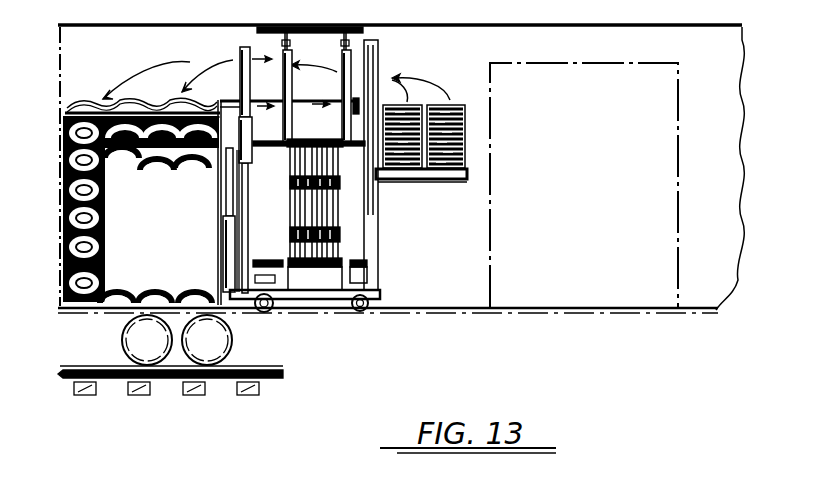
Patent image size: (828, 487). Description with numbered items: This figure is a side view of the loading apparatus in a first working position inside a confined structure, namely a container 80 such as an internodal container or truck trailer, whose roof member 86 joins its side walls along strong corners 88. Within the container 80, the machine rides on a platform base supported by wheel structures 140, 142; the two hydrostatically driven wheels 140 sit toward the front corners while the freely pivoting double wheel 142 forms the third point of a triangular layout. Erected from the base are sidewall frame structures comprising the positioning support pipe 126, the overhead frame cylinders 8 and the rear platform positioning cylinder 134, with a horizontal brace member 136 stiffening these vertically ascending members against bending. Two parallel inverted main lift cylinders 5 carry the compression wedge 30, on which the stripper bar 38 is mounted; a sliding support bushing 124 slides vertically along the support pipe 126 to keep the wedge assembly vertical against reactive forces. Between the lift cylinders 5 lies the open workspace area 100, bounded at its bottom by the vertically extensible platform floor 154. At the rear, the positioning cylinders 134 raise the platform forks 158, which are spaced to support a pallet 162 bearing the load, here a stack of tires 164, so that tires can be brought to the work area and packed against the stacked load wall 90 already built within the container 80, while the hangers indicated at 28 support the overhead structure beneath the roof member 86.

The main lift cylinder 5 is at (224, 209).
The overhead frame cylinder 8 is at (337, 80).
The hanger 28 is at (307, 36).
The compression wedge 30 is at (66, 111).
The stripper bar 38 is at (217, 105).
The container 80 is at (446, 314).
The roof member 86 is at (265, 22).
The corner 88 is at (432, 31).
The tire wall 90 is at (60, 210).
The open workspace area 100 is at (261, 202).
The sliding support bushing 124 is at (258, 122).
The positioning support pipe 126 is at (252, 95).
The rear platform positioning cylinder 134 is at (377, 219).
The horizontal brace member 136 is at (264, 258).
The wheel structure 140 is at (263, 308).
The wheel structure 142 is at (360, 312).
The platform floor 154 is at (327, 140).
The platform fork 158 is at (420, 183).
The pallet 162 is at (470, 173).
The tires 164 is at (470, 141).